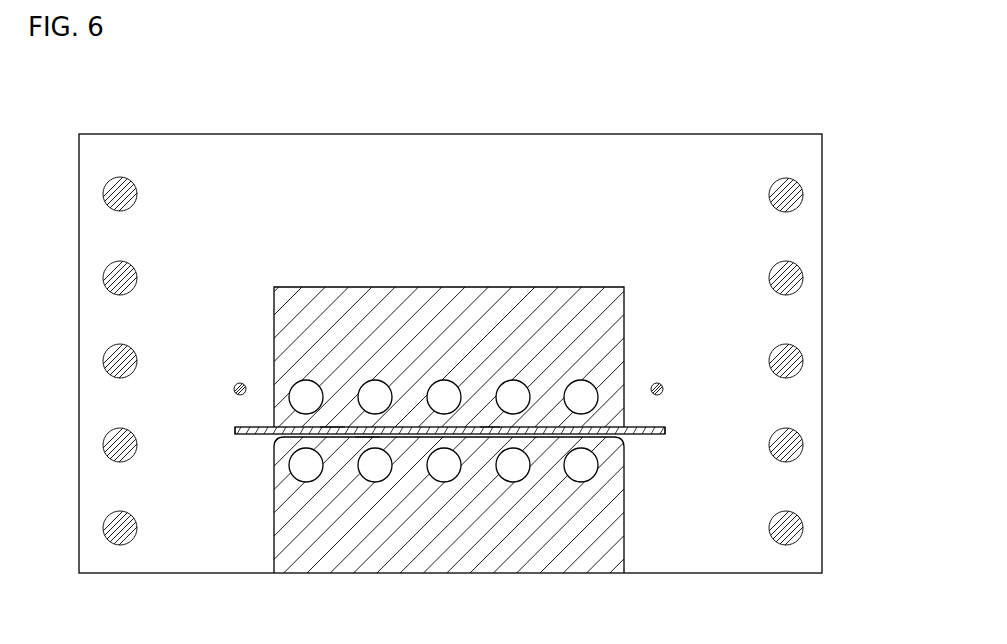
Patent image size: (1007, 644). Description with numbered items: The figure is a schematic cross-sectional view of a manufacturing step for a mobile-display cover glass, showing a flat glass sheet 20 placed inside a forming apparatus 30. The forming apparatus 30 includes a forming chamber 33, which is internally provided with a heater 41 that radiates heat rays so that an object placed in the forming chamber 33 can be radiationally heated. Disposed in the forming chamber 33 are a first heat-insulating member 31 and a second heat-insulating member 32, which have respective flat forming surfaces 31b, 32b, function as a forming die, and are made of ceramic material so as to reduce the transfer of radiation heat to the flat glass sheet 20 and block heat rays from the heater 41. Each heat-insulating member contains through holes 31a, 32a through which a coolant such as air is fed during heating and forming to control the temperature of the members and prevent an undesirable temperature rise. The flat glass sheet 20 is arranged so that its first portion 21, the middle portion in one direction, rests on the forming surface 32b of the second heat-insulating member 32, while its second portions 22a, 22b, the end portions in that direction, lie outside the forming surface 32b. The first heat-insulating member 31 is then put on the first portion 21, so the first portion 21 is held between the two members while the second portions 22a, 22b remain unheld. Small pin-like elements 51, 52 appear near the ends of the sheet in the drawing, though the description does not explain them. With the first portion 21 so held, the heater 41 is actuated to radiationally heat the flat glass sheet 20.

The flat glass sheet 20 is at (668, 431).
The first portion 21 is at (491, 427).
The second portion 22a is at (266, 427).
The second portion 22b is at (633, 427).
The forming apparatus 30 is at (820, 113).
The first heat-insulating member 31 is at (590, 286).
The through hole 31a is at (450, 379).
The forming surface 31b is at (366, 438).
The second heat-insulating member 32 is at (626, 522).
The through hole 32a is at (446, 471).
The forming surface 32b is at (331, 427).
The forming chamber 33 is at (696, 171).
The heater 41 is at (128, 209).
The first positioning pin 51 is at (239, 384).
The second positioning pin 52 is at (665, 389).